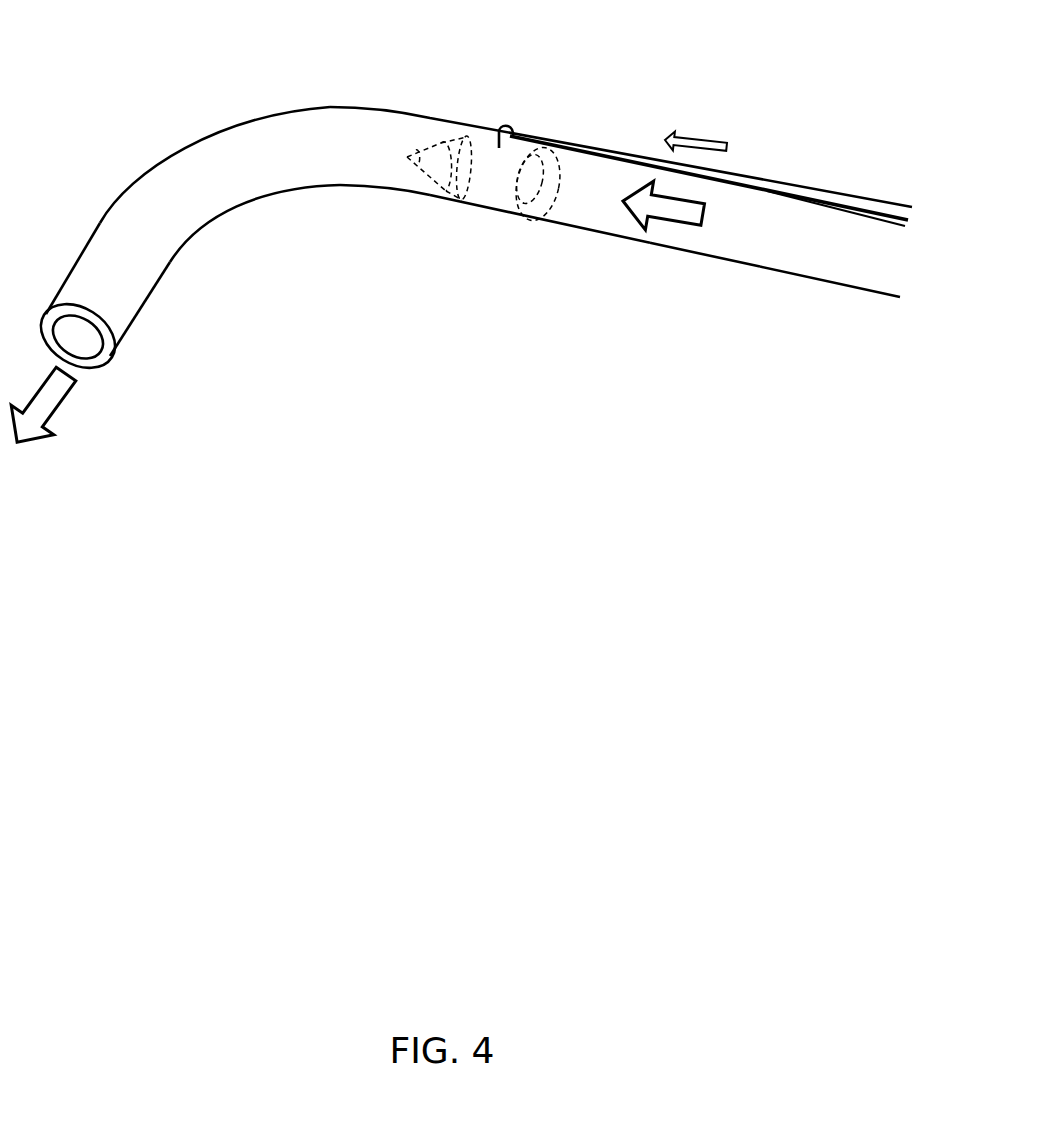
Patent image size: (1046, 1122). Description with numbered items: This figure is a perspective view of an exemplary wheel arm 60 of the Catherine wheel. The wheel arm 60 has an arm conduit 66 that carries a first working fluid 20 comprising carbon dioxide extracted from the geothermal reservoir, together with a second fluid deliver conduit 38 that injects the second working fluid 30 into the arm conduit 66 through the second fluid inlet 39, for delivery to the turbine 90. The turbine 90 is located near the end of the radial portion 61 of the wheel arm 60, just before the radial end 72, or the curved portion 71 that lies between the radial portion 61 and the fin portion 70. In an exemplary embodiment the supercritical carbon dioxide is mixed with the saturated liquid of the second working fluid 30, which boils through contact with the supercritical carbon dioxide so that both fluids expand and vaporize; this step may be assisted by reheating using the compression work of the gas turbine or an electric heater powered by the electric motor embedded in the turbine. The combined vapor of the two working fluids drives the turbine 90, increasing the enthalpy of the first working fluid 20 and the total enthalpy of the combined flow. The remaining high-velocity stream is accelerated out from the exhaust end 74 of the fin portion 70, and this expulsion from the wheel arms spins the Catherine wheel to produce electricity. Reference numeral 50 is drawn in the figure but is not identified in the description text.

The first working fluid 20 is at (657, 223).
The second working fluid 30 is at (550, 145).
The second fluid deliver conduit 38 is at (647, 163).
The second fluid inlet 39 is at (498, 148).
The catheter shaft 50 is at (735, 233).
The wheel arm 60 is at (587, 210).
The radial portion 61 is at (783, 217).
The arm conduit 66 is at (817, 242).
The fin portion 70 is at (113, 257).
The curved portion 71 is at (253, 157).
The radial end 72 is at (362, 137).
The exhaust end 74 is at (82, 348).
The turbine 90 is at (482, 190).